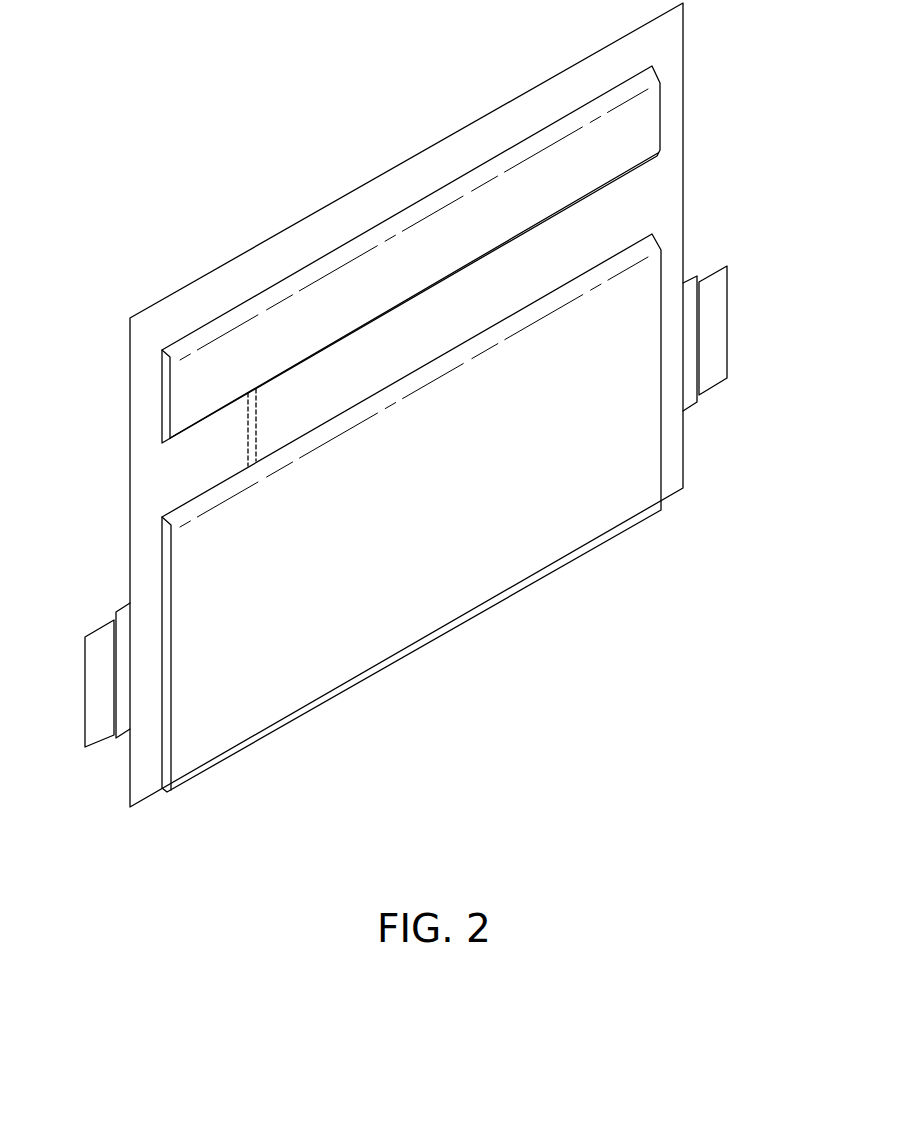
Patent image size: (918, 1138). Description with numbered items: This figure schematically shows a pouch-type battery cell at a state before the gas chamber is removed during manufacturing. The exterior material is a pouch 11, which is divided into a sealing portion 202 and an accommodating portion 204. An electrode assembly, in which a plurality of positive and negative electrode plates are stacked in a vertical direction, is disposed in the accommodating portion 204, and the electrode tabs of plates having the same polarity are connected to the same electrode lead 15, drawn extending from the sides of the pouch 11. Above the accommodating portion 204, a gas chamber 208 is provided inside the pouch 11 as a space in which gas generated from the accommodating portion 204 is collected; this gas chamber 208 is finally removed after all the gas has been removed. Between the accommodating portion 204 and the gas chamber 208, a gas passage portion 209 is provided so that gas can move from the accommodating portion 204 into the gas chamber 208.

The pouch 11 is at (439, 405).
The electrode lead 15 is at (715, 348).
The sealing portion 202 is at (465, 414).
The accommodating portion 204 is at (432, 603).
The gas chamber 208 is at (490, 202).
The gas passage portion 209 is at (255, 415).